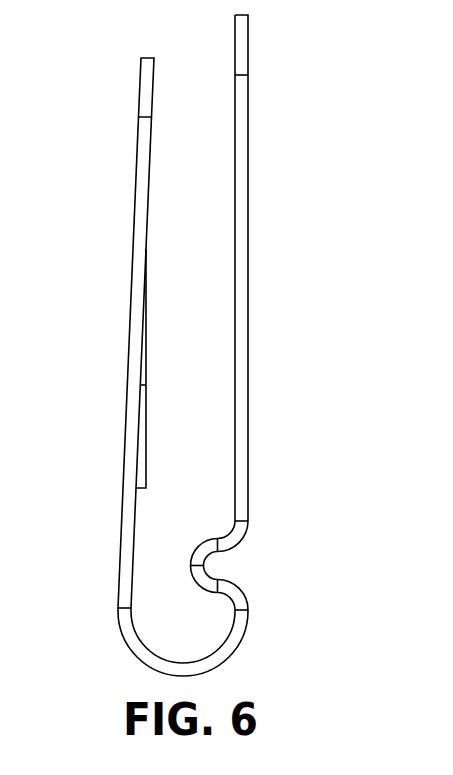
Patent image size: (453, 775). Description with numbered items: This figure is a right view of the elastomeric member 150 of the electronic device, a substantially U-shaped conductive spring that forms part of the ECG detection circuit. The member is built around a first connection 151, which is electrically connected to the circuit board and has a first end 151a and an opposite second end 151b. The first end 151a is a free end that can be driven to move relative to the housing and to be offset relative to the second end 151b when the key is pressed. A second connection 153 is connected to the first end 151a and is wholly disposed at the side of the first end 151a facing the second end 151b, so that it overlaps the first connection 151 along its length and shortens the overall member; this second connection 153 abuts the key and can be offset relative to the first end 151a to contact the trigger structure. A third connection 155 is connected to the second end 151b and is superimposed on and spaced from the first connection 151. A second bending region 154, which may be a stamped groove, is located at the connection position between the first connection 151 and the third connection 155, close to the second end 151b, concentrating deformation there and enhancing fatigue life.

The elastomeric member 150 is at (149, 72).
The first connection 151 is at (137, 317).
The first end 151a is at (146, 113).
The second end 151b is at (125, 583).
The second connection 153 is at (141, 465).
The second bending region 154 is at (201, 561).
The third connection 155 is at (247, 230).